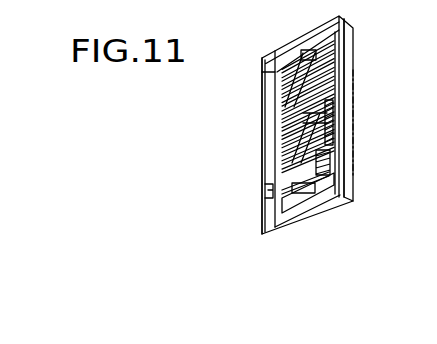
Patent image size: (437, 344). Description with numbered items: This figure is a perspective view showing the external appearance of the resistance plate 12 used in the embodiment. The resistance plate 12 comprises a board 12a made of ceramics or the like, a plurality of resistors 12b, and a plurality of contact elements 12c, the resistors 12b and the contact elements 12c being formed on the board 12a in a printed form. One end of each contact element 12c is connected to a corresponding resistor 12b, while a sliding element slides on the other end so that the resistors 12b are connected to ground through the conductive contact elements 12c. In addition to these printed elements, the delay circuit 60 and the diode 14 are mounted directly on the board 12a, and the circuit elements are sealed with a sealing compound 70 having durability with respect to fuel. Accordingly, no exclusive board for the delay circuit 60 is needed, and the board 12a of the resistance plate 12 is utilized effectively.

The resistance plate 12 is at (346, 73).
The board 12a is at (293, 220).
The resistors 12b is at (343, 160).
The contact elements 12c is at (265, 165).
The diode 14 is at (263, 202).
The delay circuit 60 is at (262, 134).
The sealing compound 70 is at (263, 151).